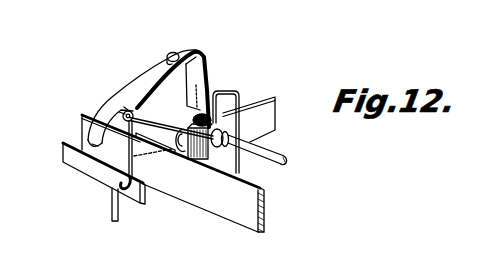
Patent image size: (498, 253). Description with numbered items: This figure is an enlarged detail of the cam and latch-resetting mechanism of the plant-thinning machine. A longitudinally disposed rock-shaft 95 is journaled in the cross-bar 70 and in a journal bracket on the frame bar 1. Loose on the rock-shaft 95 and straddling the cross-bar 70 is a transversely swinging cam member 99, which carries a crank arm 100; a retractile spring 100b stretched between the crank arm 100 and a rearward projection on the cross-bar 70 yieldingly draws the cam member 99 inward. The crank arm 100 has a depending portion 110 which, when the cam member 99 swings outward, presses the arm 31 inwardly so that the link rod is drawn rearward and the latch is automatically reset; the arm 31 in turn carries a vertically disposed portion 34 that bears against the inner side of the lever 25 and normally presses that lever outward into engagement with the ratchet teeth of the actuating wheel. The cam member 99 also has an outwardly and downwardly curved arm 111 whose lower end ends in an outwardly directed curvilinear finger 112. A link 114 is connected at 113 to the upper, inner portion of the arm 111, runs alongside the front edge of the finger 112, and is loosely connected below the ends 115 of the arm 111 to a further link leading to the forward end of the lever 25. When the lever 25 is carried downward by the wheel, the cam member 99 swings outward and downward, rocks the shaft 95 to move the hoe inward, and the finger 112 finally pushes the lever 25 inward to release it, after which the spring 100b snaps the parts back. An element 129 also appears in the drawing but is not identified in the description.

The frame bar 1 is at (183, 173).
The lever 25 is at (92, 178).
The vertically disposed portion 34 is at (112, 216).
The depending portion 110 is at (140, 159).
The curved arm 111 is at (165, 76).
The curvilinear finger 112 is at (93, 133).
The connection point 113 is at (180, 43).
The link 114 is at (122, 113).
The ends of the arm 115 is at (125, 108).
The cam member 99 is at (186, 93).
The retractile spring 100b is at (205, 86).
The crank arm 100 is at (157, 113).
The arm 31 is at (183, 127).
The rock-shaft 95 is at (283, 157).
The loop 129 is at (229, 89).
The cross-bar 70 is at (266, 97).